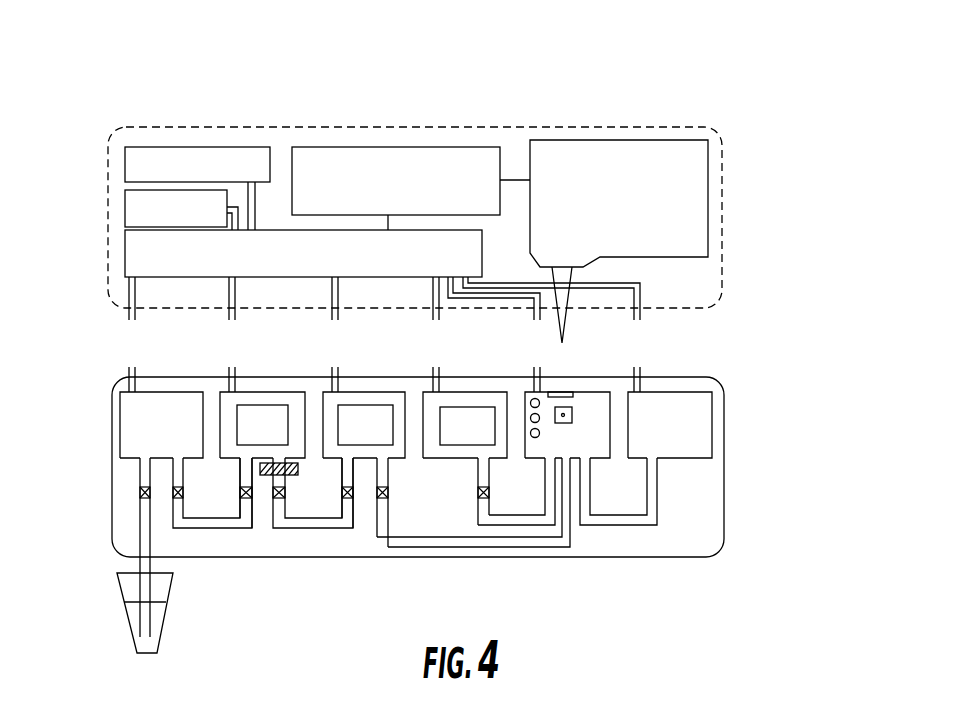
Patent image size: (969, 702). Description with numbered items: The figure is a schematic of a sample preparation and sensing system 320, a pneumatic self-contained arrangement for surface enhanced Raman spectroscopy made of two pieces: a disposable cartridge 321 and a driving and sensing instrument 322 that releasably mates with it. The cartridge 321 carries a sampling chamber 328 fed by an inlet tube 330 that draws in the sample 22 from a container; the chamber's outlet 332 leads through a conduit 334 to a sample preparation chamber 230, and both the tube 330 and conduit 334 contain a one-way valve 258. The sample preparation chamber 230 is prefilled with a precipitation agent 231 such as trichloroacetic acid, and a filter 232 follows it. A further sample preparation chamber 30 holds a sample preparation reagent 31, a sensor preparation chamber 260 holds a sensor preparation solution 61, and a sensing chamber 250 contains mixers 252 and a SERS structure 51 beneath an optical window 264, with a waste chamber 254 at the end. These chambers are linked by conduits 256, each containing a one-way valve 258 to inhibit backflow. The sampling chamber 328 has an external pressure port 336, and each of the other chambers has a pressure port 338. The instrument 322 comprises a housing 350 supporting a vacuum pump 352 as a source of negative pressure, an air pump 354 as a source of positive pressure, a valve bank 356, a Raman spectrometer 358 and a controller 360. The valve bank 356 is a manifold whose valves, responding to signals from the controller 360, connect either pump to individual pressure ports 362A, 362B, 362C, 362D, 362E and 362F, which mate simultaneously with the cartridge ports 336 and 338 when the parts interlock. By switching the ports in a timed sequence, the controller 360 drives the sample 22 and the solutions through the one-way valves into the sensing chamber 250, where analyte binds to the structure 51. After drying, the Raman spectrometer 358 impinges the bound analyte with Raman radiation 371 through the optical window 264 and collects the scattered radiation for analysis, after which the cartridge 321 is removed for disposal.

The sample preparation and sensing system 320 is at (220, 62).
The driving and sensing instrument 322 is at (730, 161).
The housing 350 is at (723, 245).
The vacuum pump 352 is at (125, 163).
The air pump 354 is at (125, 208).
The valve bank 356 is at (125, 255).
The Raman spectrometer 358 is at (665, 140).
The controller 360 is at (437, 148).
The pressure port 362A is at (129, 313).
The pressure port 362B is at (229, 316).
The pressure port 362C is at (333, 315).
The pressure port 362D is at (439, 315).
The pressure port 362E is at (541, 315).
The pressure port 362F is at (640, 316).
The Raman radiation 371 is at (567, 298).
The disposable cartridge 321 is at (711, 568).
The external pressure port 336 is at (130, 372).
The pressure port 338 is at (232, 368).
The sampling chamber 328 is at (120, 428).
The inlet tube 330 is at (140, 568).
The sample 22 is at (133, 610).
The outlet 332 is at (183, 462).
The conduit 334 is at (218, 528).
The sample preparation chamber 230 is at (257, 392).
The precipitation agent 231 is at (281, 405).
The filter 232 is at (288, 475).
The sample preparation chamber 30 is at (357, 392).
The sample preparation reagent 31 is at (387, 405).
The sensor preparation chamber 260 is at (458, 393).
The sensor preparation solution 61 is at (476, 407).
The sensing chamber 250 is at (573, 390).
The optical window 264 is at (552, 397).
The mixers 252 is at (533, 437).
The SERS structure 51 is at (572, 417).
The waste chamber 254 is at (688, 392).
The one-way valve 258 is at (140, 492).
The conduit 256 is at (510, 515).